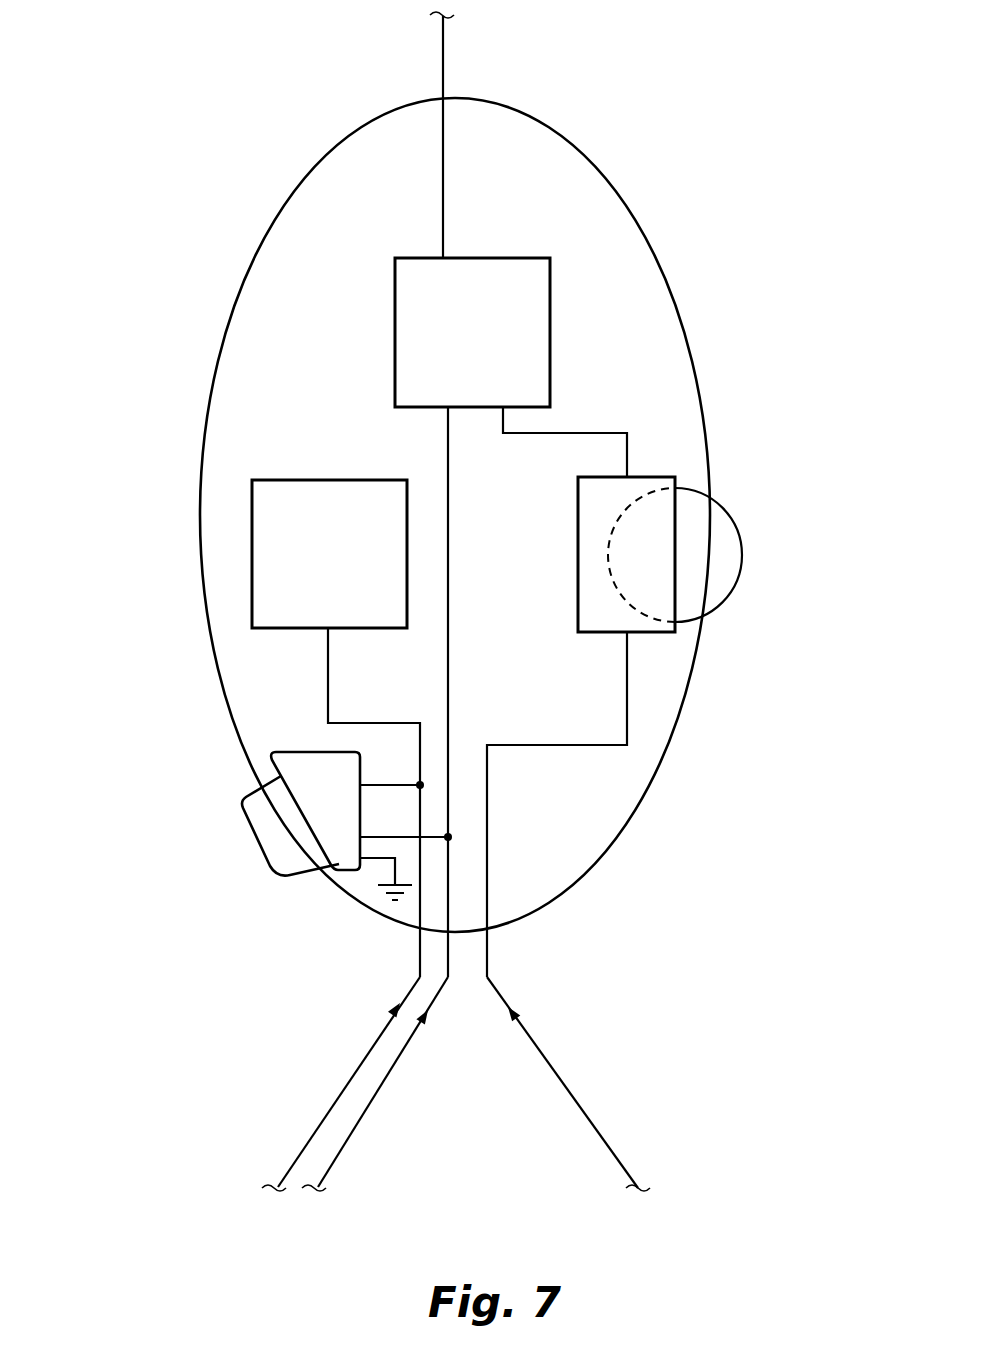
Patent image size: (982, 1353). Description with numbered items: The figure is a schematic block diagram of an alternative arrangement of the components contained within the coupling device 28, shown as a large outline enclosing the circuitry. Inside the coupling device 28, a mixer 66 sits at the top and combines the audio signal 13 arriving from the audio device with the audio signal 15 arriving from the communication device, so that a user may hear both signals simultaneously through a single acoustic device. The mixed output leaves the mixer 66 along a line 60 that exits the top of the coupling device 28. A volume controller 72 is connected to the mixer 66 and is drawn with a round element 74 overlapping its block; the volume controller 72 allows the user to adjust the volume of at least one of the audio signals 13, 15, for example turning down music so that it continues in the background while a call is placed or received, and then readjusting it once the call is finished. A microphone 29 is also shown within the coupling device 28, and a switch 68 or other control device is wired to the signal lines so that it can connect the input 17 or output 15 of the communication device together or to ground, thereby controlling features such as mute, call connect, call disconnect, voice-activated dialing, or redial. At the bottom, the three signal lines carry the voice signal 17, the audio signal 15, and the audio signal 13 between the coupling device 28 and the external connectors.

The coupling device 28 is at (171, 73).
The input line 60 is at (443, 197).
The mixer 66 is at (460, 370).
The microphone 29 is at (317, 580).
The volume controller 72 is at (648, 620).
The transducer 74 is at (730, 548).
The switch 68 is at (326, 799).
The voice signal 17 is at (353, 1063).
The audio signal 15 is at (365, 1107).
The audio signal 13 is at (588, 1112).